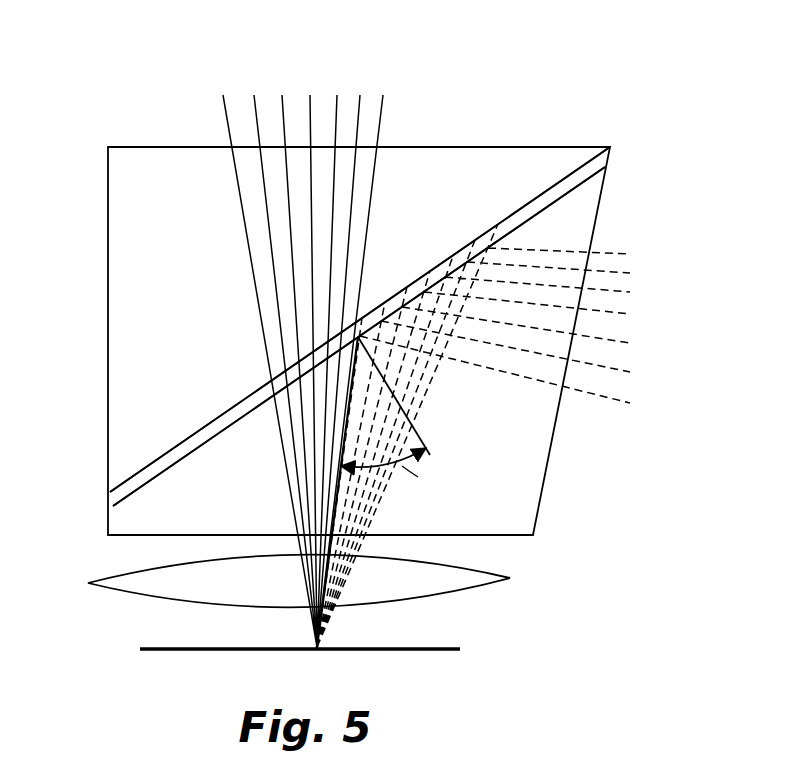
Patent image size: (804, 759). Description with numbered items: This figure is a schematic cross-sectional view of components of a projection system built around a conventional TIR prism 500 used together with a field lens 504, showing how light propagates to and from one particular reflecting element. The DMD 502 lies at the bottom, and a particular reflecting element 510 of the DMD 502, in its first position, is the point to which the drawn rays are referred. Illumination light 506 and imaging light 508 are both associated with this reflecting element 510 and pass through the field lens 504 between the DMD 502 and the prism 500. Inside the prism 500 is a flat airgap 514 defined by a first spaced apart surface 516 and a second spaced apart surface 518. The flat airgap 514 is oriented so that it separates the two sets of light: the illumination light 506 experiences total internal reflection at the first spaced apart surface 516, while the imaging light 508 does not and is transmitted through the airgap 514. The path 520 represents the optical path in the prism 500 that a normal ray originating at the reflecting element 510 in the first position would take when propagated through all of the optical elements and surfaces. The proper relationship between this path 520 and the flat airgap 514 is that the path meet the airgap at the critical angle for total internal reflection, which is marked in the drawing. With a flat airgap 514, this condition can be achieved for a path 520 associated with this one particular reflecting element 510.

The TIR prism 500 is at (568, 118).
The DMD 502 is at (158, 651).
The field lens 504 is at (138, 583).
The illumination light 506 is at (622, 316).
The imaging light 508 is at (310, 110).
The reflecting element 510 is at (318, 649).
The flat airgap 514 is at (112, 499).
The first spaced apart surface 516 is at (118, 508).
The second spaced apart surface 518 is at (143, 470).
The path 520 is at (341, 506).